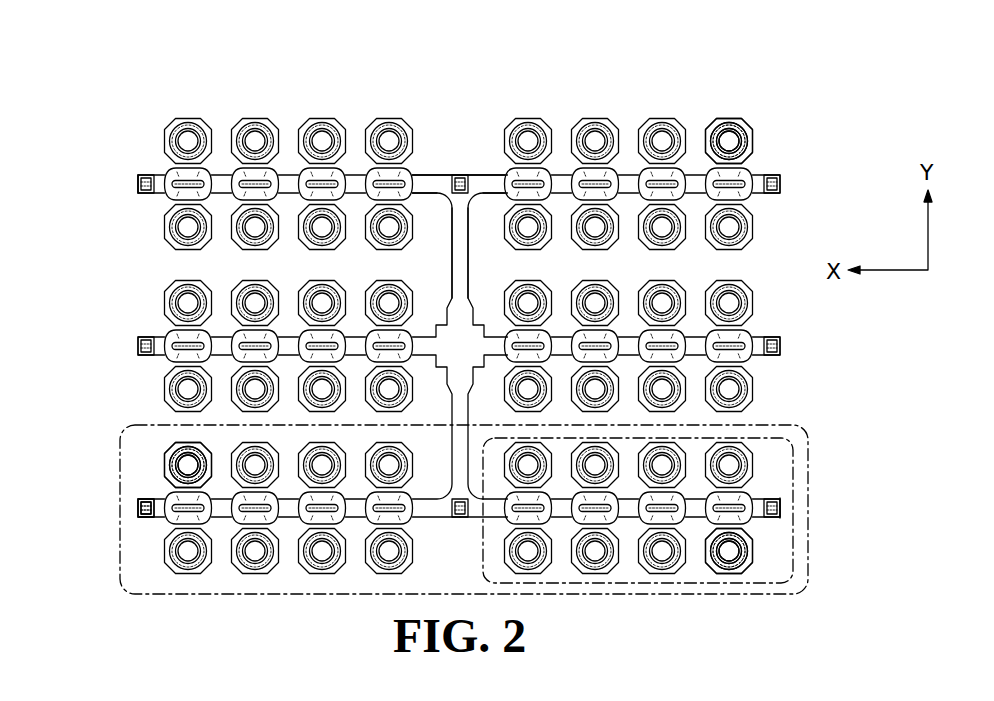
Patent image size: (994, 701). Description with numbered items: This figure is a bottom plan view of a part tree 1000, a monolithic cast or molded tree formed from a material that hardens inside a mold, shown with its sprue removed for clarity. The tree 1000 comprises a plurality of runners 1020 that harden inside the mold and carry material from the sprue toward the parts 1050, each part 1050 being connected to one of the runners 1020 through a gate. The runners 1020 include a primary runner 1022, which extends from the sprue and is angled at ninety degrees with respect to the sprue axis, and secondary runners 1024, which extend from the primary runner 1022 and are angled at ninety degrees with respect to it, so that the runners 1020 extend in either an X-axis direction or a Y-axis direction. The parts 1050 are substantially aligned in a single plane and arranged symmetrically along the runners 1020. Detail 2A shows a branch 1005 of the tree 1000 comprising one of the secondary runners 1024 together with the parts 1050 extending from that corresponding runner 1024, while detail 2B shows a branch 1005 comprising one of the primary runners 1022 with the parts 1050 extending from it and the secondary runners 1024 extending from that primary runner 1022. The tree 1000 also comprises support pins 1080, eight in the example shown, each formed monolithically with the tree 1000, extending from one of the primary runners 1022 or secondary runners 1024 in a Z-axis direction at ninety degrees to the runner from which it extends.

The part tree 1000 is at (165, 56).
The branch 1005 is at (164, 458).
The runners 1020 is at (422, 182).
The primary runner 1022 is at (383, 253).
The secondary runner 1024 is at (487, 182).
The parts 1050 is at (728, 118).
The support pins 1080 is at (146, 518).
The detail 2A is at (796, 440).
The detail 2B is at (126, 428).